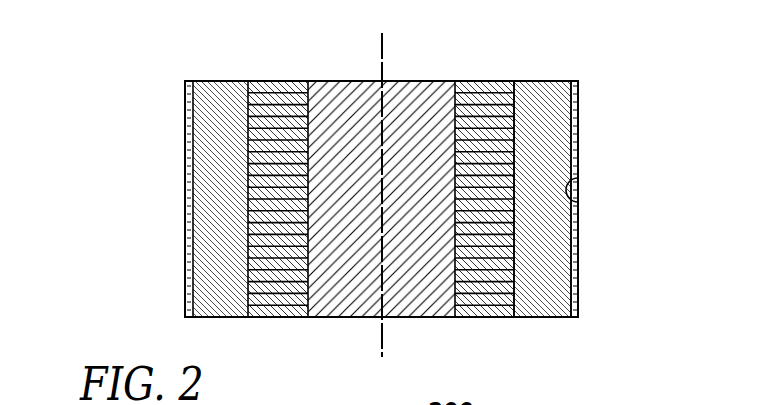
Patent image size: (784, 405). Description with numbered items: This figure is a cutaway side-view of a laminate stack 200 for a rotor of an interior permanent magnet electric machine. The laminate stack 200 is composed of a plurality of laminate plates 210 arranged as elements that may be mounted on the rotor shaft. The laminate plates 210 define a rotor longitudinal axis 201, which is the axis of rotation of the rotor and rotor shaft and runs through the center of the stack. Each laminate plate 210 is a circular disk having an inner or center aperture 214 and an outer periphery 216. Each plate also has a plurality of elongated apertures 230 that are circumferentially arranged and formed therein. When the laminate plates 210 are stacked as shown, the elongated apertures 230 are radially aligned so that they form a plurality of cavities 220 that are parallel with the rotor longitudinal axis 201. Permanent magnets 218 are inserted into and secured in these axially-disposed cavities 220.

The laminate stack 200 is at (120, 124).
The rotor longitudinal axis 201 is at (380, 62).
The laminate plates 210 is at (253, 233).
The center aperture 214 is at (454, 145).
The outer periphery 216 is at (575, 270).
The permanent magnets 218 is at (545, 148).
The cavities 220 is at (578, 178).
The elongated apertures 230 is at (515, 125).